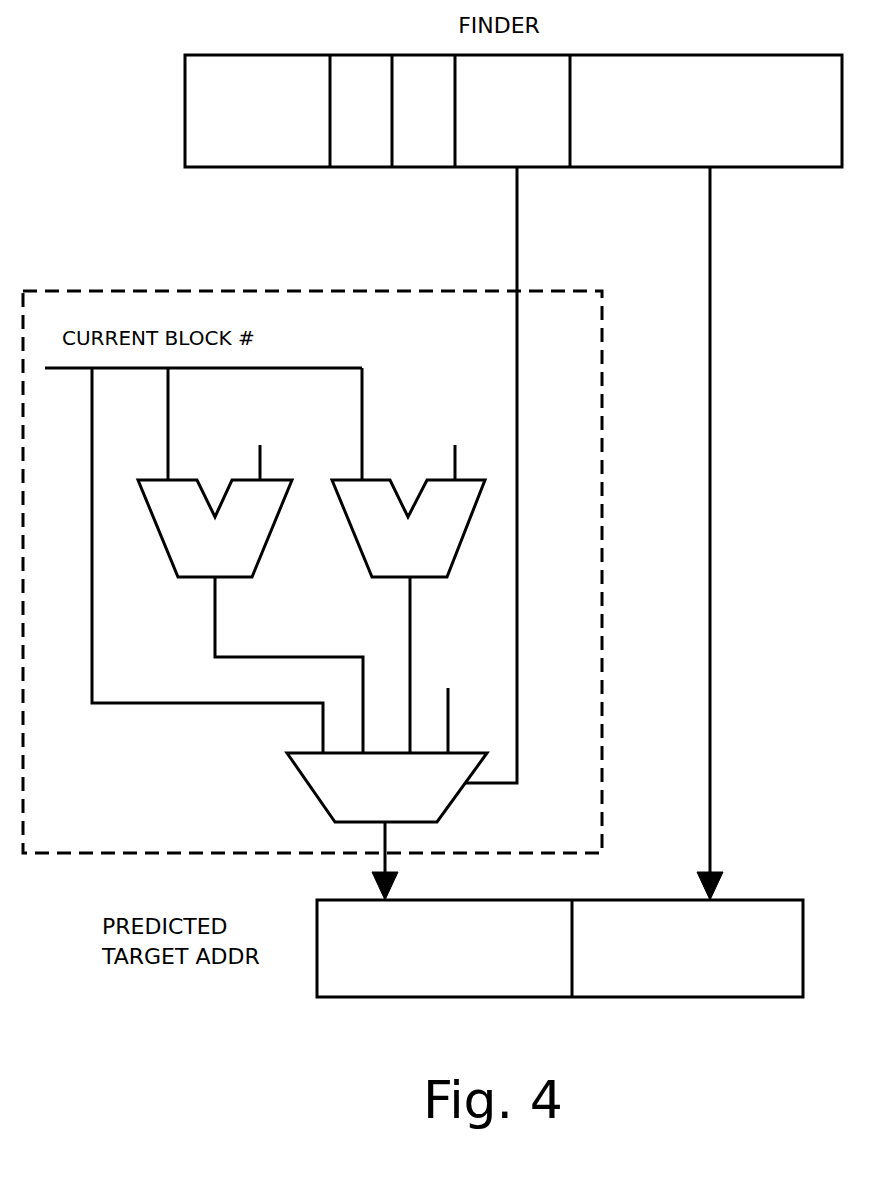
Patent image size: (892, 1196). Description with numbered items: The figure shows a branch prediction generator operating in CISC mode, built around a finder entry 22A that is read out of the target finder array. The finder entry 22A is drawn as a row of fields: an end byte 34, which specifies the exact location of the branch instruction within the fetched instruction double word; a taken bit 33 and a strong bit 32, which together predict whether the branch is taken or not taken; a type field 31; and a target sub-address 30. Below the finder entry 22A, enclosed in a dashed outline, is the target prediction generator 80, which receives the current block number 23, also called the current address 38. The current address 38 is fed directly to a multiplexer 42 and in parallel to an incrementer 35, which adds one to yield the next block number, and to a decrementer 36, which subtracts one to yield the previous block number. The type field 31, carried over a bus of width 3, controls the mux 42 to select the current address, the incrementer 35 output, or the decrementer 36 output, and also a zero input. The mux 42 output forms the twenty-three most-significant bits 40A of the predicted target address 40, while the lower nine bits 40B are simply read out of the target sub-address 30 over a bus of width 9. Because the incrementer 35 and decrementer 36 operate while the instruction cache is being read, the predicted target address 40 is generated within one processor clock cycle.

The finder entry 22A is at (185, 134).
The end byte 34 is at (253, 167).
The taken bit 33 is at (351, 168).
The strong bit 32 is at (413, 168).
The type field 31 is at (483, 168).
The target sub-address 30 is at (778, 168).
The target prediction generator 80 is at (577, 291).
The current block number 23 is at (78, 359).
The current address 38 is at (337, 368).
The incrementer 35 is at (167, 555).
The decrementer 36 is at (360, 557).
The multiplexer 42 is at (315, 793).
The 3-bit type bus 3 is at (500, 360).
The 9-bit sub-address bus 9 is at (728, 597).
The predicted target address 40 is at (317, 965).
The upper bits of predicted target address 40A is at (447, 997).
The lower bits of predicted target address 40B is at (722, 997).